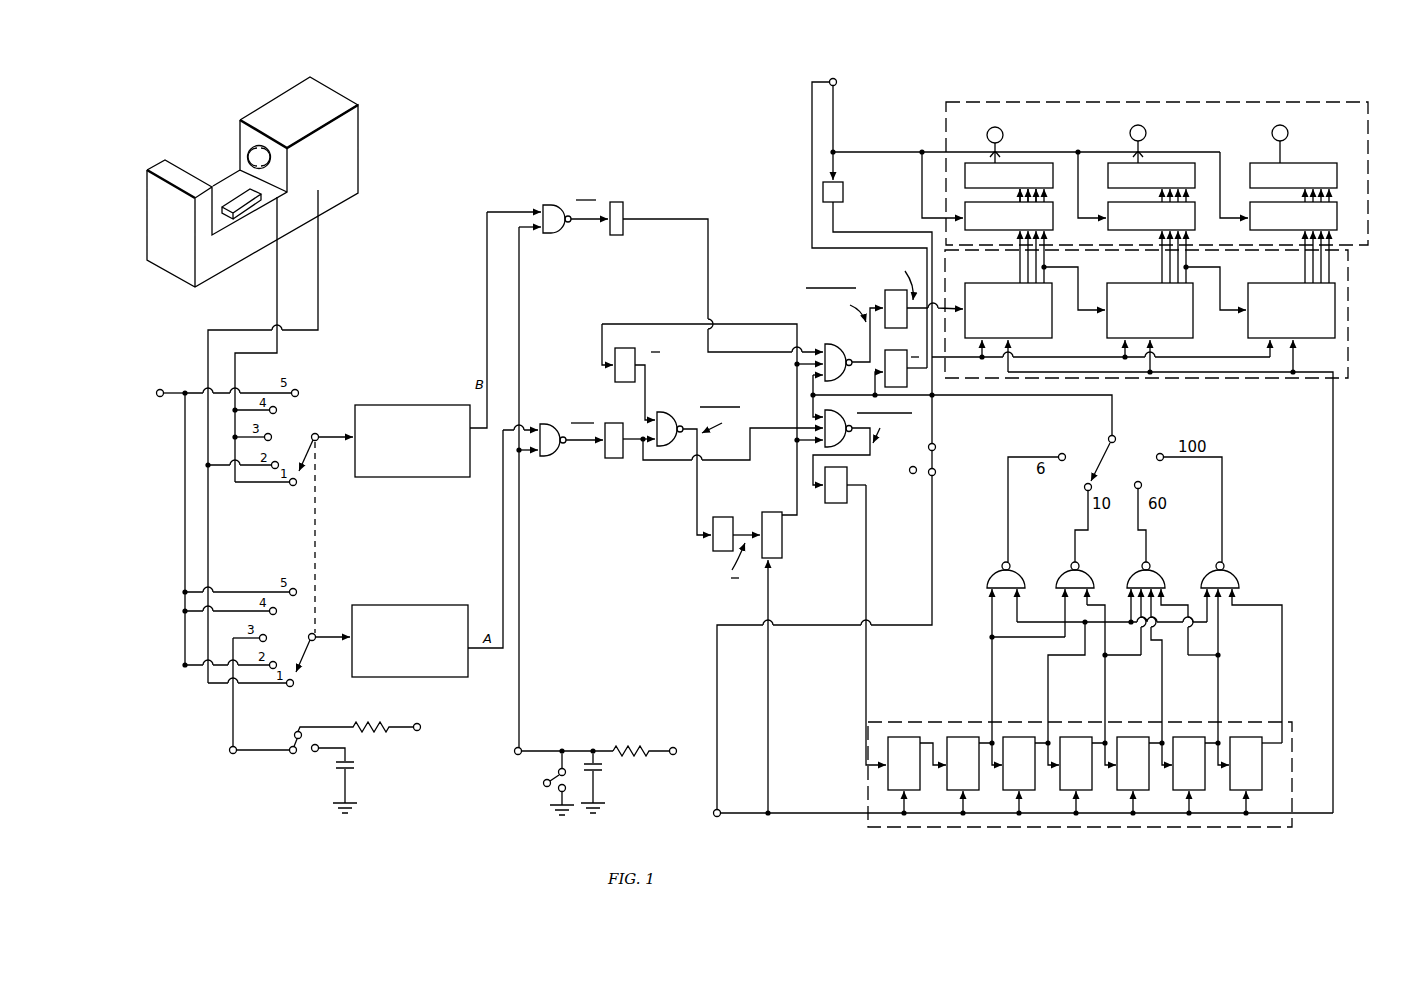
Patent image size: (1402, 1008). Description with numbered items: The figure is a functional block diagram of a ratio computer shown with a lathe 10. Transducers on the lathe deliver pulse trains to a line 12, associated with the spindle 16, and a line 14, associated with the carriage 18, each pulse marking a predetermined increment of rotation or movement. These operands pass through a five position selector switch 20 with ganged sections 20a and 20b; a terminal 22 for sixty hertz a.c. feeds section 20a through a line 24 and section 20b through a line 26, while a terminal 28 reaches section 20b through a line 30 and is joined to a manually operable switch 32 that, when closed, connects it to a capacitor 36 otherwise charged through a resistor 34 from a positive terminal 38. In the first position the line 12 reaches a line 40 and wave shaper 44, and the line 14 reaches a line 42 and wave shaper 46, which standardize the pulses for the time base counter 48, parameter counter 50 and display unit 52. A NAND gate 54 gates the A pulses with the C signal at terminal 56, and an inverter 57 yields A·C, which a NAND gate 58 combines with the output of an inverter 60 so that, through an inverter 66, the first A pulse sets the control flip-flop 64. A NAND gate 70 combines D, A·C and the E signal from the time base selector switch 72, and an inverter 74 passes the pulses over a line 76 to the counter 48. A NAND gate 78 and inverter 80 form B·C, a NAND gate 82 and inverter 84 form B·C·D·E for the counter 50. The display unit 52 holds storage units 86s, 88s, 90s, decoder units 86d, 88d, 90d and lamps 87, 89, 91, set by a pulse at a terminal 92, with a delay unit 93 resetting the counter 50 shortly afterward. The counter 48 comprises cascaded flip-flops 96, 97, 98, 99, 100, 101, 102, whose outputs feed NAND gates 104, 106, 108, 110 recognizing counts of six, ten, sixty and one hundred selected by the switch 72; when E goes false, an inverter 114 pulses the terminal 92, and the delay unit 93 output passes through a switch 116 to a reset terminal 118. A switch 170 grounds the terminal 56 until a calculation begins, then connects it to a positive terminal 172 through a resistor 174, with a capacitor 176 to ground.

The lathe 10 is at (389, 151).
The line 12 is at (319, 266).
The line 14 is at (276, 301).
The spindle 16 is at (242, 150).
The carriage 18 is at (229, 198).
The five position selector switch 20 is at (300, 554).
The switch section 20a is at (321, 455).
The switch section 20b is at (317, 633).
The terminal 22 is at (157, 393).
The line 24 is at (196, 391).
The line 26 is at (184, 529).
The terminal 28 is at (233, 755).
The line 30 is at (234, 717).
The manually operable switch 32 is at (302, 760).
The resistor 34 is at (364, 722).
The capacitor 36 is at (354, 768).
The terminal 38 is at (419, 731).
The line 40 is at (318, 648).
The line 42 is at (330, 432).
The wave shaper 44 is at (401, 612).
The wave shaper 46 is at (397, 410).
The time base counter 48 is at (912, 830).
The parameter counter 50 is at (1255, 385).
The display unit 52 is at (1335, 98).
The NAND gate 54 is at (552, 458).
The terminal 56 is at (514, 755).
The inverter 57 is at (613, 459).
The NAND gate 58 is at (676, 405).
The inverter 60 is at (614, 380).
The control flip-flop 64 is at (781, 560).
The inverter 66 is at (726, 517).
The NAND gate 70 is at (853, 440).
The time base selector switch 72 is at (1127, 433).
The inverter 74 is at (849, 471).
The line 76 is at (868, 524).
The NAND gate 78 is at (550, 203).
The inverter 80 is at (622, 203).
The NAND gate 82 is at (838, 349).
The inverter 84 is at (898, 289).
The decoder unit 86d is at (1009, 182).
The storage unit 86s is at (1009, 216).
The lamp 87 is at (1002, 128).
The decoder unit 88d is at (1151, 182).
The storage unit 88s is at (1151, 216).
The lamp 89 is at (1145, 126).
The decoder unit 90d is at (1293, 182).
The storage unit 90s is at (1293, 216).
The lamp 91 is at (1287, 126).
The terminal 92 is at (830, 80).
The delay unit 93 is at (845, 192).
The flip-flop 96 is at (903, 736).
The flip-flop 97 is at (962, 736).
The flip-flop 98 is at (1018, 736).
The flip-flop 99 is at (1075, 736).
The flip-flop 100 is at (1132, 736).
The flip-flop 101 is at (1188, 736).
The flip-flop 102 is at (1246, 736).
The NAND gate 104 is at (991, 571).
The NAND gate 106 is at (1067, 571).
The NAND gate 108 is at (1137, 571).
The NAND gate 110 is at (1228, 578).
The inverter 114 is at (889, 351).
The switch 116 is at (937, 458).
The terminal 118 is at (713, 815).
The switch 170 is at (545, 786).
The terminal 172 is at (674, 747).
The resistor 174 is at (628, 746).
The capacitor 176 is at (606, 768).